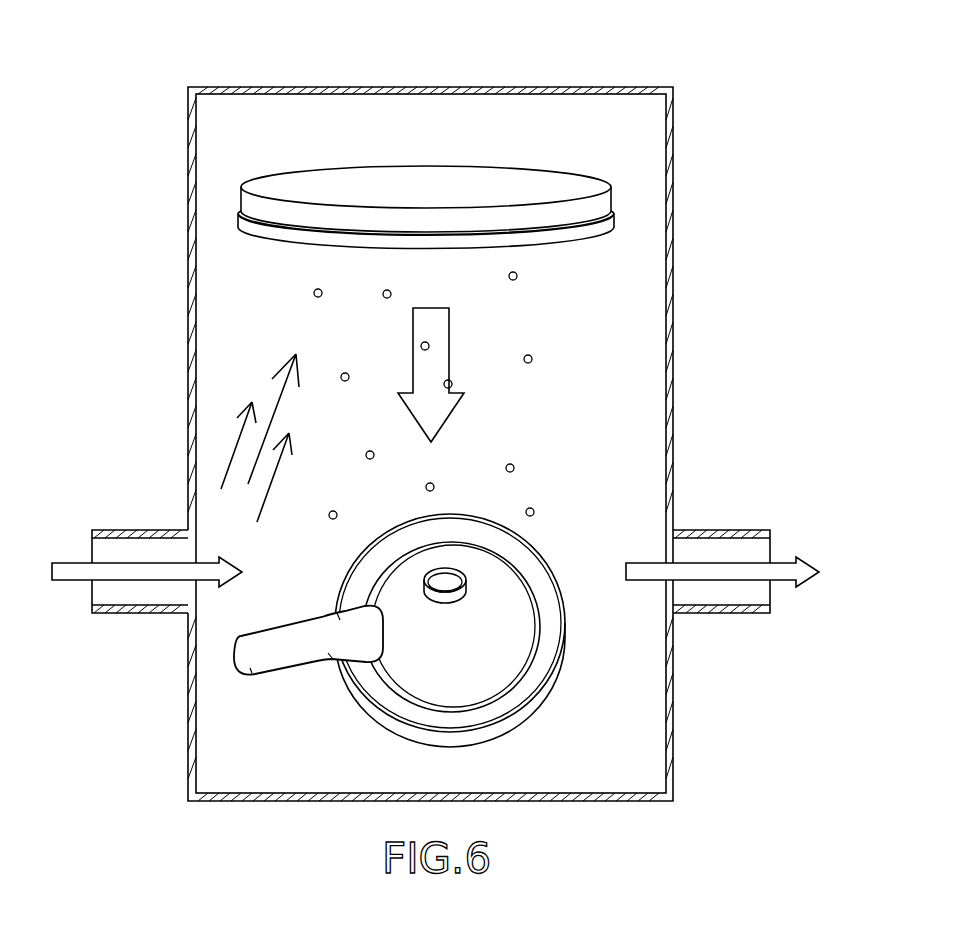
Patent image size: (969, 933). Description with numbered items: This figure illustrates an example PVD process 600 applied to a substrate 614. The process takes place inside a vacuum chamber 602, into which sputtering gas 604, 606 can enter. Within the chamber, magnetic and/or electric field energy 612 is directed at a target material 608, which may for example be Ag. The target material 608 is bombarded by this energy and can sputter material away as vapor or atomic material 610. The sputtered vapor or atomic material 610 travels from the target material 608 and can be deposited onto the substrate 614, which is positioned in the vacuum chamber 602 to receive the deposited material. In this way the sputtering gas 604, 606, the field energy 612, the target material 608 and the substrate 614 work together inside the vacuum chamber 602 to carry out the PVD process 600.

The PVD process 600 is at (435, 408).
The vacuum chamber 602 is at (673, 313).
The sputtering gas 604 is at (121, 570).
The sputtering gas 606 is at (732, 570).
The target material 608 is at (328, 180).
The vapor or atomic material 610 is at (437, 405).
The magnetic and/or electric field energy 612 is at (226, 450).
The substrate 614 is at (490, 675).